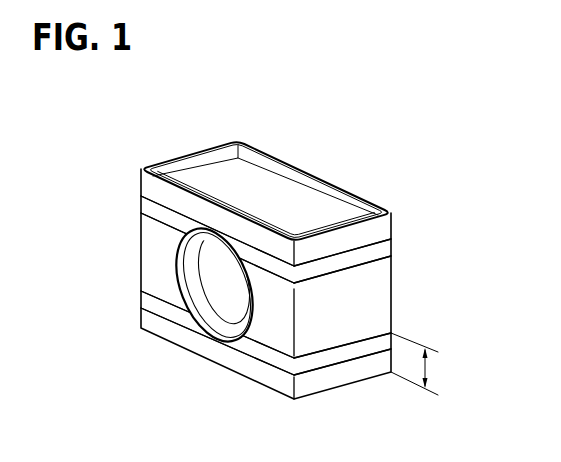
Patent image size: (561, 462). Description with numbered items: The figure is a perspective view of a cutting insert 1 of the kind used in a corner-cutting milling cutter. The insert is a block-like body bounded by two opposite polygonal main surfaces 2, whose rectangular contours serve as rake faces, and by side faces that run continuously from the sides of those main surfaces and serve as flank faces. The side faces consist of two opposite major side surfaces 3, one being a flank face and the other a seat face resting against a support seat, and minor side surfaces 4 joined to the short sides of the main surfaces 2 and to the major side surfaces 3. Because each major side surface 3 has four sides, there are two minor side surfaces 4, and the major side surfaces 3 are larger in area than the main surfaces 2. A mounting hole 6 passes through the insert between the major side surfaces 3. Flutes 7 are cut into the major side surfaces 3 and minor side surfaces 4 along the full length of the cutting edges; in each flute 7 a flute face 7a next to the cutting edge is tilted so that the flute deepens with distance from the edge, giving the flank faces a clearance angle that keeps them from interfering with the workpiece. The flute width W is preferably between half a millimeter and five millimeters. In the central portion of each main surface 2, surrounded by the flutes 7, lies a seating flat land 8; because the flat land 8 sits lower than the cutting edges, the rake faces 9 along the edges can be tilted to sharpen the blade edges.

The cutting insert 1 is at (259, 266).
The main surface 2 is at (275, 205).
The major side surface 3 is at (160, 260).
The minor side surface 4 is at (370, 297).
The mounting hole 6 is at (212, 302).
The flute 7 is at (160, 225).
The flute face 7a is at (150, 187).
The seating flat land 8 is at (219, 178).
The rake face 9 is at (330, 192).
The flute width W is at (427, 370).